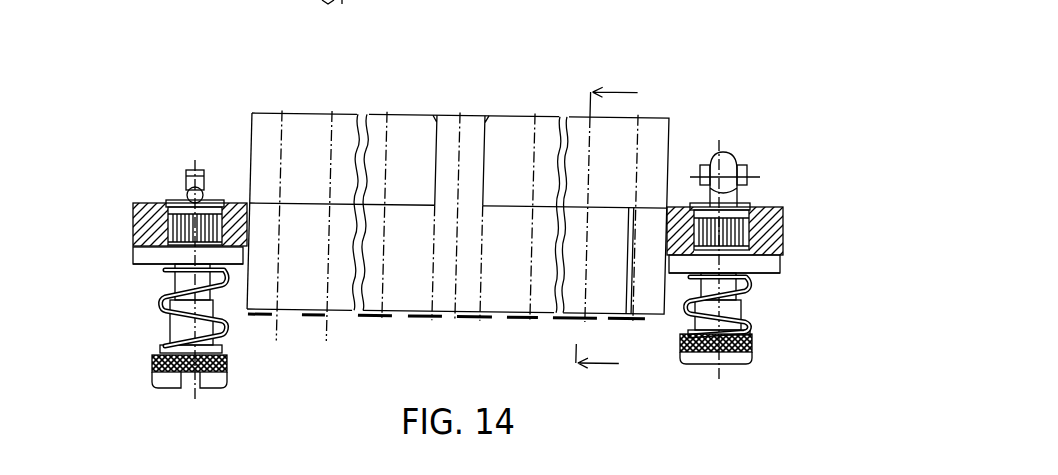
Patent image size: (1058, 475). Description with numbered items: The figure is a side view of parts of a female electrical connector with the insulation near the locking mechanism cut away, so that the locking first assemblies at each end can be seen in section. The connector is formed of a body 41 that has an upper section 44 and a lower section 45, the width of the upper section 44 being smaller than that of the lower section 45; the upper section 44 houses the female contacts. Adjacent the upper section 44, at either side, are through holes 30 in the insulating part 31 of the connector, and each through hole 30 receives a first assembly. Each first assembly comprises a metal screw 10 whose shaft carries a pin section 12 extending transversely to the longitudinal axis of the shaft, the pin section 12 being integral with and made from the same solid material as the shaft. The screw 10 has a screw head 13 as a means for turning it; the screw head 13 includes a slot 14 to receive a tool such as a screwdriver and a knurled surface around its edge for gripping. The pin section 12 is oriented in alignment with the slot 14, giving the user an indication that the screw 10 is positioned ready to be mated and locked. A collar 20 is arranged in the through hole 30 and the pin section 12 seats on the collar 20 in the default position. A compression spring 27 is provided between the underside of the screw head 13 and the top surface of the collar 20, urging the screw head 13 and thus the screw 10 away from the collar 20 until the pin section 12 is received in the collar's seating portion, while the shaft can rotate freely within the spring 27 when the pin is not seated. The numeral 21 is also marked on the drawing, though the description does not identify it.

The screw 10 is at (140, 371).
The pin section 12 is at (201, 191).
The screw head 13 is at (218, 385).
The slot 14 is at (195, 380).
The collar 20 is at (127, 274).
The plate 21 is at (131, 250).
The compression spring 27 is at (160, 300).
The through hole 30 is at (160, 203).
The insulating part 31 is at (135, 200).
The body 41 is at (522, 113).
The upper section 44 is at (326, 125).
The lower section 45 is at (401, 296).